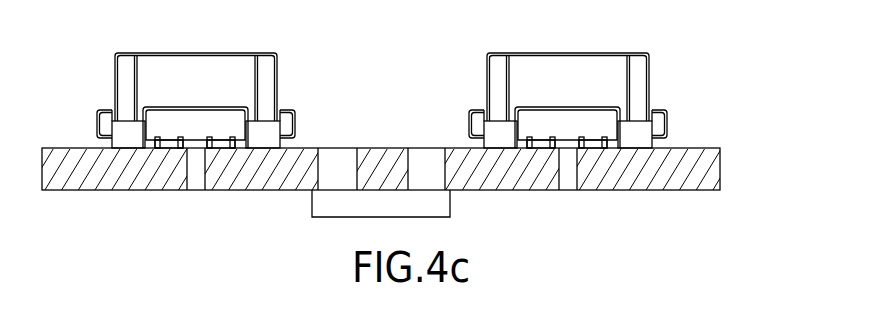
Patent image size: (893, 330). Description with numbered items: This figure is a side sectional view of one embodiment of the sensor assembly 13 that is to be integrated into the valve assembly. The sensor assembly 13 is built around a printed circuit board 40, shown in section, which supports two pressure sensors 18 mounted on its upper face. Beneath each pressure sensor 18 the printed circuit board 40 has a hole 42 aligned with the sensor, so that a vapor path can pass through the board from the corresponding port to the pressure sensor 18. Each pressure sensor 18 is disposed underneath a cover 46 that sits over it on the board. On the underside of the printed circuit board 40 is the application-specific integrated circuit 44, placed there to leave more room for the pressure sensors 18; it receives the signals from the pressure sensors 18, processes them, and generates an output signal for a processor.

The sensor assembly 13 is at (721, 213).
The pressure sensor 18 is at (247, 108).
The printed circuit board 40 is at (710, 163).
The hole 42 is at (197, 191).
The application-specific integrated circuit 44 is at (430, 208).
The cover 46 is at (196, 60).